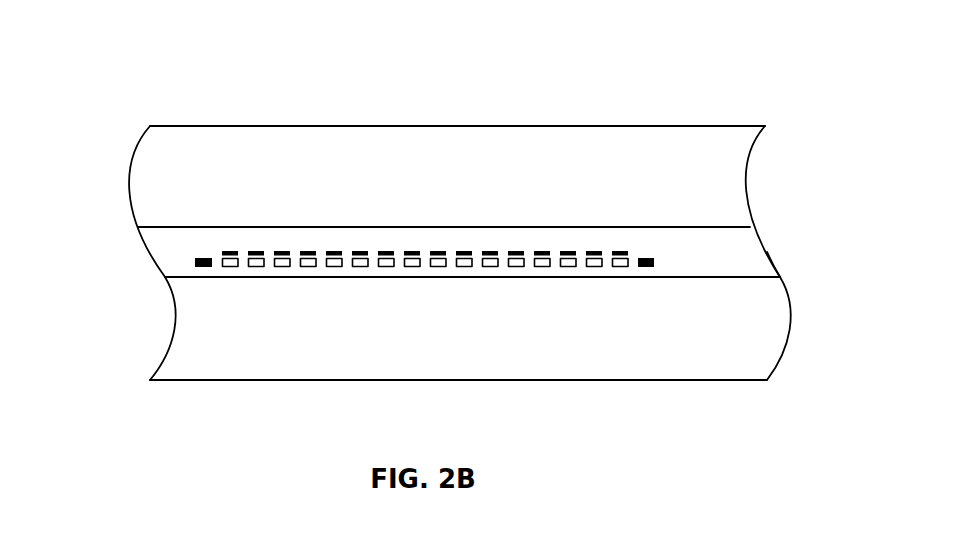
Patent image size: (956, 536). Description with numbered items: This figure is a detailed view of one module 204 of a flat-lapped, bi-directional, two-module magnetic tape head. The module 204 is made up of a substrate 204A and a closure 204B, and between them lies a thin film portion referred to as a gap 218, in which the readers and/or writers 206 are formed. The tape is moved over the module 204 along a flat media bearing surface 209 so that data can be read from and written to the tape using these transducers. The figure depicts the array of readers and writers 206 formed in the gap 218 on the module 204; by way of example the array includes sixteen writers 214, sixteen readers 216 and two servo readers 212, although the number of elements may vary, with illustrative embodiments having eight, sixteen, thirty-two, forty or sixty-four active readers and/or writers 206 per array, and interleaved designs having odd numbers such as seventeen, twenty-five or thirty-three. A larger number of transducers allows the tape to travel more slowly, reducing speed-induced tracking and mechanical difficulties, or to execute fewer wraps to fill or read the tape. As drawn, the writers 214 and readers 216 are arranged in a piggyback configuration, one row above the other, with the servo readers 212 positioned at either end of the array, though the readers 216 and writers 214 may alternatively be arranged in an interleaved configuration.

The module 204 is at (160, 95).
The substrate 204A is at (252, 127).
The closure 204B is at (307, 380).
The media bearing surface 209 is at (384, 194).
The readers and/or writers 206 is at (486, 252).
The servo readers 212 is at (195, 262).
The writers 214 is at (541, 251).
The readers 216 is at (542, 267).
The gap 218 is at (767, 252).